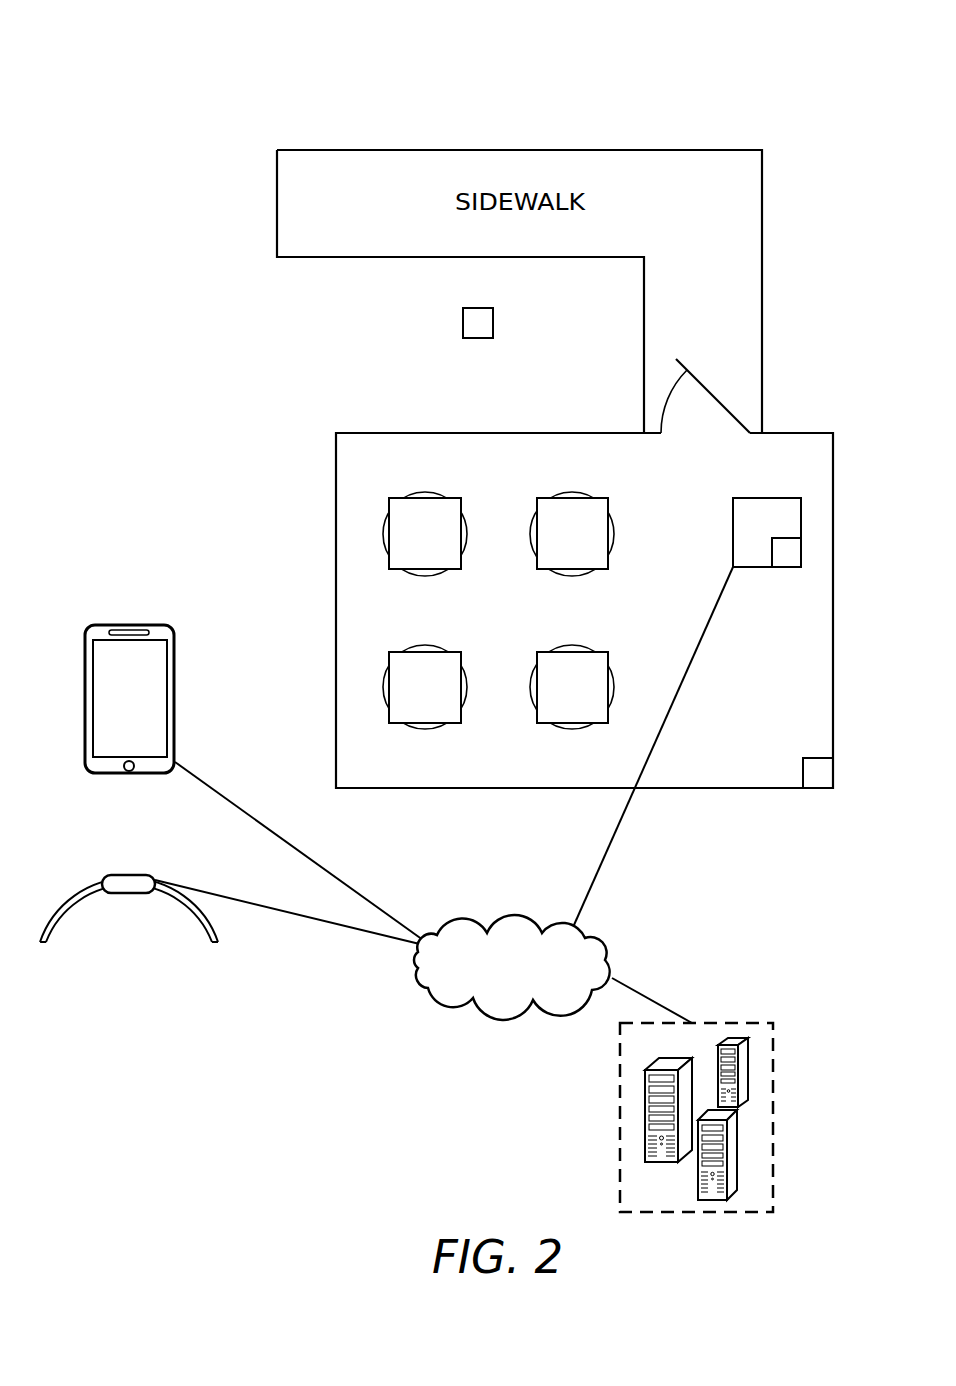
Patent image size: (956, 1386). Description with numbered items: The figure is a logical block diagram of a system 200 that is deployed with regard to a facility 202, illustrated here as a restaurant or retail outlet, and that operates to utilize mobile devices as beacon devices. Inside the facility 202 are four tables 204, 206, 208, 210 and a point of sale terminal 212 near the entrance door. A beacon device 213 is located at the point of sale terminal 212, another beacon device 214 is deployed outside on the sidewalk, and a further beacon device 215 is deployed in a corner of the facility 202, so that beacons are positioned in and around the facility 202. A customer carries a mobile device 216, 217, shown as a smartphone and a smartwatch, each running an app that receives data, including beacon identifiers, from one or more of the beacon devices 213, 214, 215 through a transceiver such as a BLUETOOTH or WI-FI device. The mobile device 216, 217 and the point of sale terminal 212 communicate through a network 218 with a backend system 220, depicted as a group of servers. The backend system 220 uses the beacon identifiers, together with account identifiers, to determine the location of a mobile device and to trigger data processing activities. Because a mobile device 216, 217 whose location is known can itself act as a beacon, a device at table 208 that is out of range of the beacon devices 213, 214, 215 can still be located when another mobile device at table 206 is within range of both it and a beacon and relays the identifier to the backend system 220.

The system 200 is at (645, 88).
The facility 202 is at (597, 432).
The table 204 is at (453, 497).
The table 206 is at (599, 497).
The table 208 is at (453, 652).
The table 210 is at (599, 652).
The point of sale terminal 212 is at (780, 497).
The beacon device 213 is at (797, 568).
The beacon device 214 is at (469, 308).
The beacon device 215 is at (822, 758).
The mobile device 216 is at (140, 623).
The mobile device 217 is at (125, 873).
The network 218 is at (607, 938).
The backend system 220 is at (698, 1023).